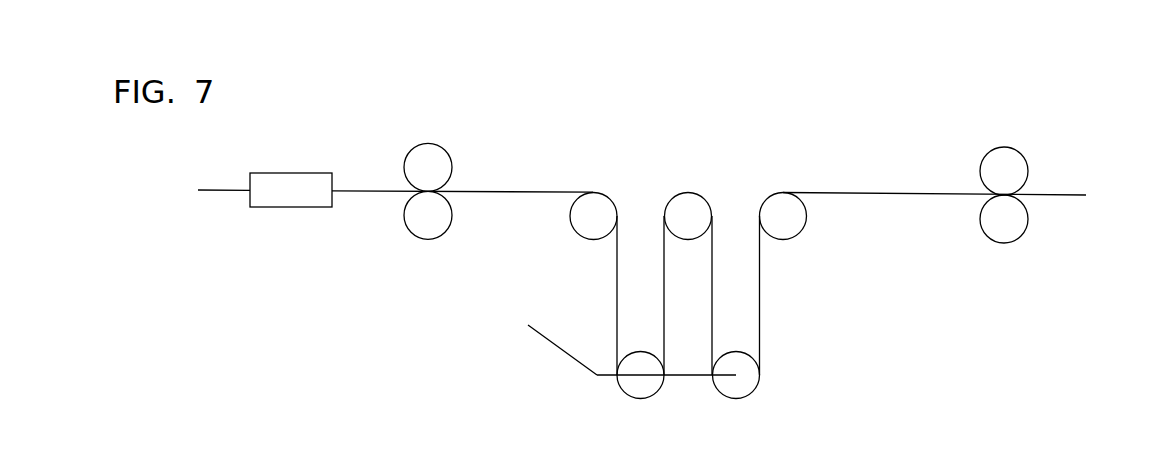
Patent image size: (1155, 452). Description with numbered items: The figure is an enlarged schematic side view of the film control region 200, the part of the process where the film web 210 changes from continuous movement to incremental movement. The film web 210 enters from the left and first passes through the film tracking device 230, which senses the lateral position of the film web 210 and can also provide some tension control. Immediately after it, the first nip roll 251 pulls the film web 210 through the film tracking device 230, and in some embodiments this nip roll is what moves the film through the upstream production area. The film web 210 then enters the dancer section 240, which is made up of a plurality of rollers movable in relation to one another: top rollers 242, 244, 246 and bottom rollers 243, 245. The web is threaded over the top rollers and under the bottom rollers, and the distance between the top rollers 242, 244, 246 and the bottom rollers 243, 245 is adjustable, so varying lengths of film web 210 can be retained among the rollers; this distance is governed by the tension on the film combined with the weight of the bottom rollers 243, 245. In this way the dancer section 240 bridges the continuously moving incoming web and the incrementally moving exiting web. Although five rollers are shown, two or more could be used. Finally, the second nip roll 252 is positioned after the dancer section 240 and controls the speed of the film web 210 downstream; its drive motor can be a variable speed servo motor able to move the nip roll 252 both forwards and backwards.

The film control region 200 is at (884, 109).
The film web 210 is at (925, 195).
The film tracking device 230 is at (272, 207).
The dancer section 240 is at (745, 163).
The top roller 242 is at (597, 190).
The bottom roller 243 is at (630, 397).
The top roller 244 is at (690, 192).
The bottom roller 245 is at (748, 395).
The top roller 246 is at (783, 193).
The first nip roll 251 is at (435, 142).
The second nip roll 252 is at (1010, 148).